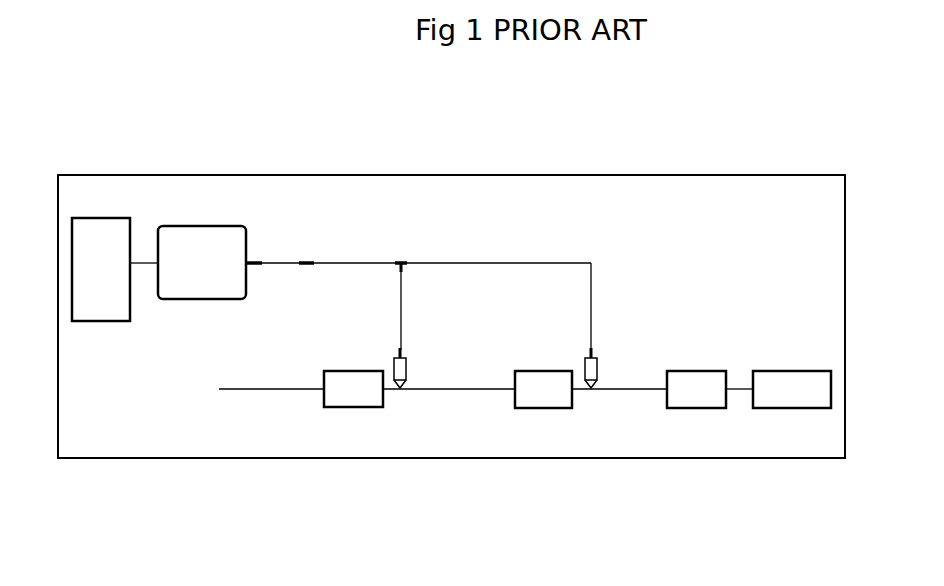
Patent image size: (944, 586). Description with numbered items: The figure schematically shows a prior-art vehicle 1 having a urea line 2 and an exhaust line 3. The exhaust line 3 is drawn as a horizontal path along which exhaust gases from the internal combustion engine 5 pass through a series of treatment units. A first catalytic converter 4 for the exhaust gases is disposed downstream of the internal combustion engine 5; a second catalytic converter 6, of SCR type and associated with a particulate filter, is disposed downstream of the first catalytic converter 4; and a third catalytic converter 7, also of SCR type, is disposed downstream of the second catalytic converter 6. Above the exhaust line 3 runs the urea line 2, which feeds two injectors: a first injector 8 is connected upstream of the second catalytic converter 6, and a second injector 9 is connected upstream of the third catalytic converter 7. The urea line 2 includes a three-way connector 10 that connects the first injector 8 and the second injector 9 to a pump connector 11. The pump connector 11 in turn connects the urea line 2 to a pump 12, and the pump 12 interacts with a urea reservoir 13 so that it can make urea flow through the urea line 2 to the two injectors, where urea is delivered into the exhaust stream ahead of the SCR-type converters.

The vehicle 1 is at (467, 167).
The urea line 2 is at (529, 217).
The exhaust line 3 is at (451, 428).
The first catalytic converter 4 is at (696, 389).
The internal combustion engine 5 is at (792, 389).
The second catalytic converter 6 is at (543, 389).
The third catalytic converter 7 is at (353, 389).
The first injector 8 is at (605, 360).
The second injector 9 is at (412, 358).
The three-way connector 10 is at (406, 252).
The pump connector 11 is at (312, 252).
The pump 12 is at (202, 262).
The urea reservoir 13 is at (101, 269).